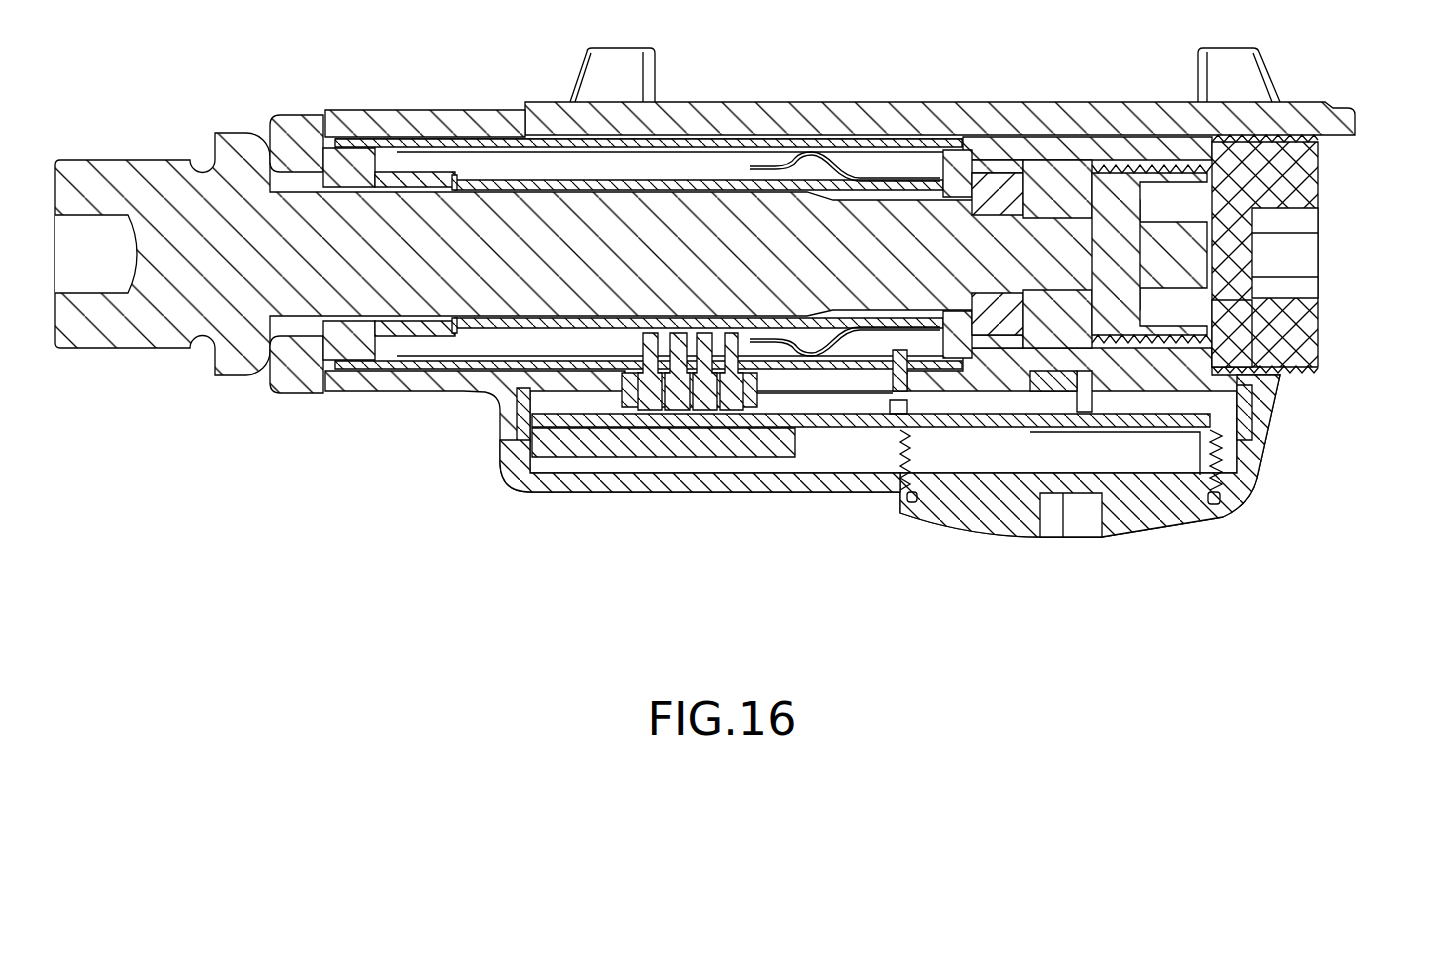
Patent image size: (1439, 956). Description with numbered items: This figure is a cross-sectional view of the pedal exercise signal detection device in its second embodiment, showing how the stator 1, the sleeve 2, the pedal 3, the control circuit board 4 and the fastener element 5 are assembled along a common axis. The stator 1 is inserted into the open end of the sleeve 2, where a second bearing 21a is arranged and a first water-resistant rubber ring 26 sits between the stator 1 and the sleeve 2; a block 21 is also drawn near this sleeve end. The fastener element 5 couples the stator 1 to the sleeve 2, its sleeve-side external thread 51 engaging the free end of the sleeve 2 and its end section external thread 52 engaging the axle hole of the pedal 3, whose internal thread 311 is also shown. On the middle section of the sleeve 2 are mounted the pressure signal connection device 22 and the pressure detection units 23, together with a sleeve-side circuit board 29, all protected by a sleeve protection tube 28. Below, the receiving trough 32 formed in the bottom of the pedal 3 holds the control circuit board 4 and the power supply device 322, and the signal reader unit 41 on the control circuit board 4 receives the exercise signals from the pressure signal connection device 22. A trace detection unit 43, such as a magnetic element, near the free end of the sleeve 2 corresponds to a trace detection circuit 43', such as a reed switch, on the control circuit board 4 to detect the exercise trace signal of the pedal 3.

The stator 1 is at (137, 340).
The sleeve 2 is at (290, 383).
The pedal 3 is at (880, 102).
The control circuit board 4 is at (735, 420).
The fastener element 5 is at (1318, 192).
The inner sleeve block 21 is at (1003, 177).
The second bearing 21a is at (427, 150).
The pressure signal connection device 22 is at (827, 372).
The pressure detection unit 23 is at (407, 395).
The first water-resistant rubber ring 26 is at (293, 115).
The sleeve protection tube 28 is at (487, 150).
The sleeve-side circuit board 29 is at (530, 340).
The receiving trough 32 is at (567, 467).
The signal reader unit 41 is at (647, 417).
The trace detection unit 43 is at (1057, 191).
The trace detection circuit 43' is at (1050, 492).
The sleeve-side external thread 51 is at (1177, 158).
The end section external thread 52 is at (1318, 332).
The internal thread 311 is at (1130, 165).
The power supply device 322 is at (1170, 463).